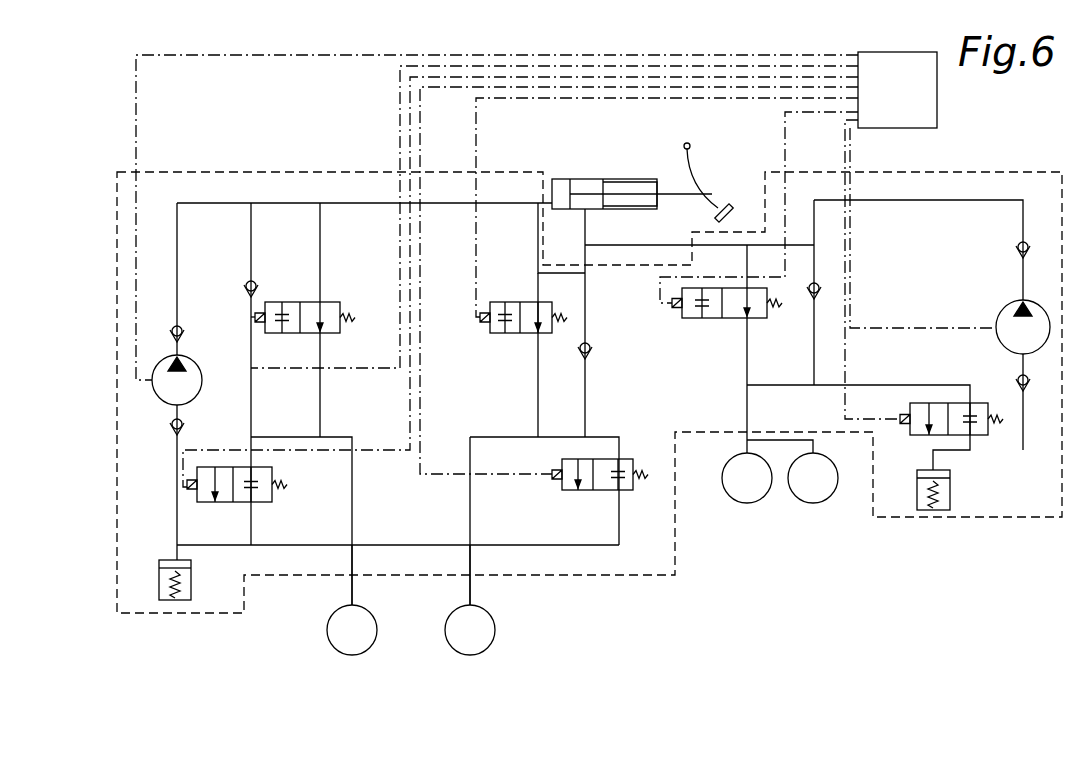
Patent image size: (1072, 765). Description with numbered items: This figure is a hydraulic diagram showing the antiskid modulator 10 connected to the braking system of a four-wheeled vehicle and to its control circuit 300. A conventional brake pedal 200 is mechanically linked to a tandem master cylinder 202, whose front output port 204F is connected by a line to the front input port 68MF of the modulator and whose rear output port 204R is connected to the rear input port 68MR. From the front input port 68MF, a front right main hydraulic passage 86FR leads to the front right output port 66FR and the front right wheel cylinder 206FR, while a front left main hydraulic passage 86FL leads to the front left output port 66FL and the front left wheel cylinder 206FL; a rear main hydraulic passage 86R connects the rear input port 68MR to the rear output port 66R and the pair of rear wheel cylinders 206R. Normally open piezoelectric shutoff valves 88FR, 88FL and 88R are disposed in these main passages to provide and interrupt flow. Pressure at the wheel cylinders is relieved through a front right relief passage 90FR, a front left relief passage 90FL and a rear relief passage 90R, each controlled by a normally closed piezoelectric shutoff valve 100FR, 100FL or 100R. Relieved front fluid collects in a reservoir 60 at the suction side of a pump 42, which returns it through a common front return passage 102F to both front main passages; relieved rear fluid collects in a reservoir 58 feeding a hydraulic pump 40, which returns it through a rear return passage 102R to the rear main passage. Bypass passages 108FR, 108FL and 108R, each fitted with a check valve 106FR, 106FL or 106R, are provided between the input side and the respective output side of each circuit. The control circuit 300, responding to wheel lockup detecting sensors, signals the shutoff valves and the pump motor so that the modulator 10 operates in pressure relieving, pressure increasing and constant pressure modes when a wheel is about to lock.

The antiskid modulator 10 is at (268, 167).
The control circuit 300 is at (889, 68).
The brake pedal 200 is at (716, 200).
The tandem master cylinder 202 is at (595, 179).
The front input port 68MF is at (543, 190).
The rear input port 68MR is at (692, 245).
The front output port 204F is at (546, 215).
The rear output port 204R is at (586, 220).
The front return passage 102F is at (178, 228).
The passage 108FR is at (251, 248).
The check valve 106FR is at (246, 289).
The normally open piezoelectric shutoff valve 88FR is at (304, 302).
The front right main hydraulic passage 86FR is at (321, 247).
The pump 42 is at (197, 395).
The normally closed piezoelectric shutoff valve 100FR is at (228, 467).
The front right relief passage 90FR is at (280, 437).
The reservoir 60 is at (192, 581).
The front right output port 66FR is at (355, 570).
The front right wheel cylinder 206FR is at (370, 612).
The front left main hydraulic passage 86FL is at (537, 227).
The normally open piezoelectric shutoff valve 88FL is at (503, 302).
The passage 108FL is at (586, 283).
The check valve 106FL is at (623, 360).
The front left relief passage 90FL is at (560, 437).
The normally closed piezoelectric shutoff valve 100FL is at (633, 456).
The front left output port 66FL is at (472, 571).
The front left wheel cylinder 206FL is at (495, 627).
The rear main hydraulic passage 86R is at (747, 266).
The normally open piezoelectric valve 88R is at (700, 318).
The rear relief passage 90R is at (777, 385).
The rear output port 66R is at (747, 426).
The rear wheel cylinders 206R is at (747, 503).
The rear return passage 102R is at (927, 200).
The passage 108R is at (815, 268).
The check valve 106R is at (822, 290).
The hydraulic pump 40 is at (1004, 306).
The normally closed piezoelectric shutoff valve 100R is at (957, 403).
The reservoir 58 is at (917, 496).